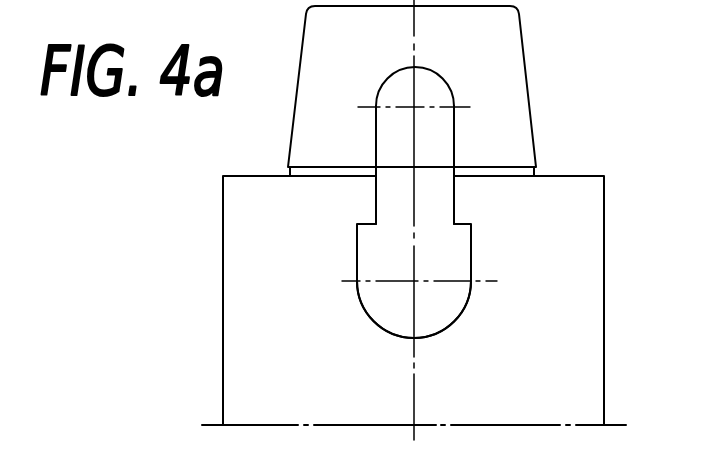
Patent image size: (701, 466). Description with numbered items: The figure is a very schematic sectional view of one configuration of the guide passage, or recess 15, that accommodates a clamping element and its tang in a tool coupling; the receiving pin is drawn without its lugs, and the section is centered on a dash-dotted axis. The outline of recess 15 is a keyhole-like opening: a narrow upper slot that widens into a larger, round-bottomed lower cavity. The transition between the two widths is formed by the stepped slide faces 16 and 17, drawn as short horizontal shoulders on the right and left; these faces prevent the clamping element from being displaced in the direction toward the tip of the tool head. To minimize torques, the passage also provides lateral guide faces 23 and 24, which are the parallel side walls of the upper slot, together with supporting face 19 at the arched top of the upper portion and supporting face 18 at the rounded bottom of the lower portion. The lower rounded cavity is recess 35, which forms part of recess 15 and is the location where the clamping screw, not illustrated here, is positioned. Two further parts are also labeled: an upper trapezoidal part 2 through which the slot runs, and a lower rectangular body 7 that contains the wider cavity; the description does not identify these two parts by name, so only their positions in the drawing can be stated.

The piston 2 is at (554, 62).
The cylinder block 7 is at (627, 288).
The recess 15 is at (513, 278).
The stepped slide face 16 is at (490, 212).
The stepped slide face 17 is at (367, 222).
The supporting face 18 is at (443, 363).
The supporting face 19 is at (458, 67).
The lateral guide face 23 is at (375, 138).
The lateral guide face 24 is at (473, 140).
The recess 35 is at (389, 316).